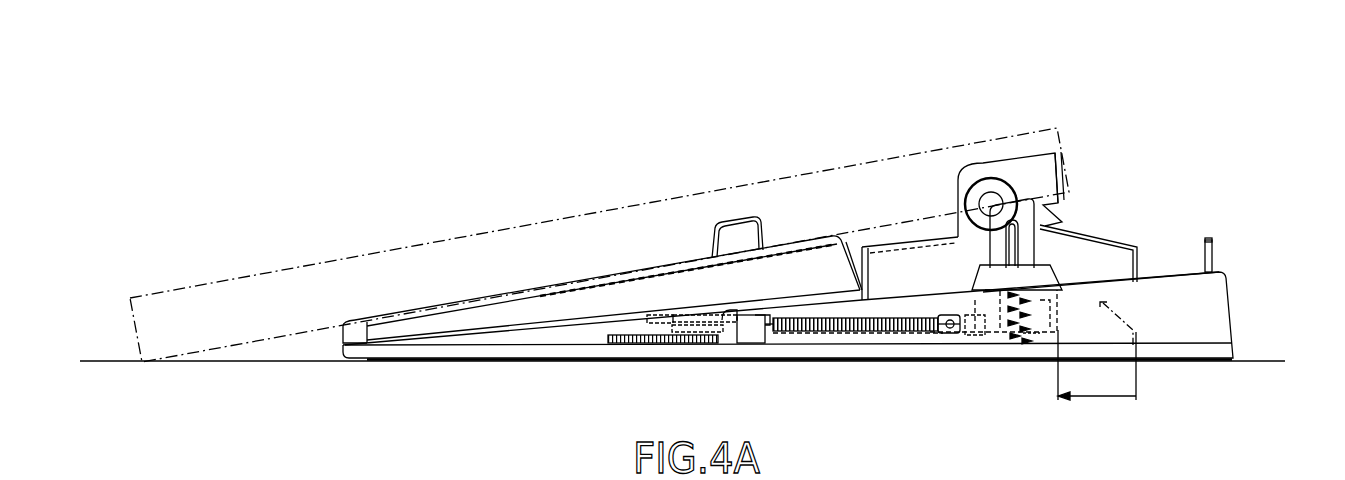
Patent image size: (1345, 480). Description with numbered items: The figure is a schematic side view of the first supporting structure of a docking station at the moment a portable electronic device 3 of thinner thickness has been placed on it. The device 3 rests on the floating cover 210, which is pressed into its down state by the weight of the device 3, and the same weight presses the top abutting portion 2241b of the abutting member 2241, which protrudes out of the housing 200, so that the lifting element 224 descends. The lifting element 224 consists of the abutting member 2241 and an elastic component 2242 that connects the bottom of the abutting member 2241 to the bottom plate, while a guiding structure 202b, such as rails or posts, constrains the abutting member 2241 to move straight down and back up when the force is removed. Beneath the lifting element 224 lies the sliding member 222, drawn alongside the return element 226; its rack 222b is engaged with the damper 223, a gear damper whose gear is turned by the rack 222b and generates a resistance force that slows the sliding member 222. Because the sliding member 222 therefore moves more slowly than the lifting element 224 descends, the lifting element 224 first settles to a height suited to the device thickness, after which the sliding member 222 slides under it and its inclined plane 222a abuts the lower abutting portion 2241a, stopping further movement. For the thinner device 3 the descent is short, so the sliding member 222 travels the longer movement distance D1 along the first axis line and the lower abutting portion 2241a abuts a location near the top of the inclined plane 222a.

The housing 200 is at (1205, 313).
The floating cover 210 is at (540, 312).
The sliding member 222 is at (1040, 344).
The inclined plane 222a is at (1023, 333).
The rack 222b is at (643, 346).
The damper 223 is at (700, 346).
The return element 226 is at (830, 334).
The lifting element 224 is at (938, 113).
The abutting member 2241 is at (957, 178).
The lower abutting portion 2241a is at (1052, 262).
The top abutting portion 2241b is at (1017, 195).
The elastic component 2242 is at (960, 315).
The guiding structure 202b is at (975, 334).
The portable electronic device 3 is at (1078, 118).
The movement distance D1 is at (1097, 365).